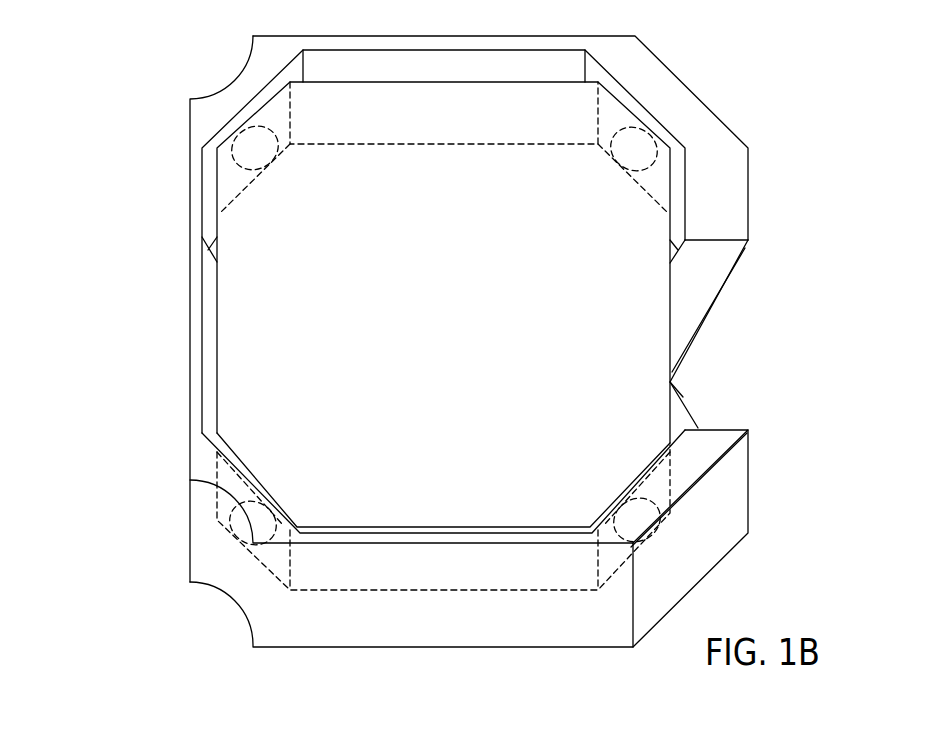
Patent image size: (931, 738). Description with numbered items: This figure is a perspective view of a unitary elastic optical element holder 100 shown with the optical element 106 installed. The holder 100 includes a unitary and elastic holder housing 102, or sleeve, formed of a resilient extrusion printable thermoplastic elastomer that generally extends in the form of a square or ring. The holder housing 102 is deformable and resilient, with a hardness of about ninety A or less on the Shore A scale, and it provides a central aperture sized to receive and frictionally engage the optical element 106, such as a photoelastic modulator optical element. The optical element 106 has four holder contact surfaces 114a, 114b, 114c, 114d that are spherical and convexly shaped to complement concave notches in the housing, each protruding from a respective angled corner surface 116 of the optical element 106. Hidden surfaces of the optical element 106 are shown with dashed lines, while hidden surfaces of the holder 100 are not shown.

The optical element holder 100 is at (100, 69).
The holder housing 102 is at (189, 212).
The optical element 106 is at (670, 302).
The holder contact surface 114a is at (632, 147).
The holder contact surface 114b is at (632, 523).
The holder contact surface 114c is at (240, 158).
The holder contact surface 114d is at (233, 523).
The angled corner surface 116 is at (275, 117).